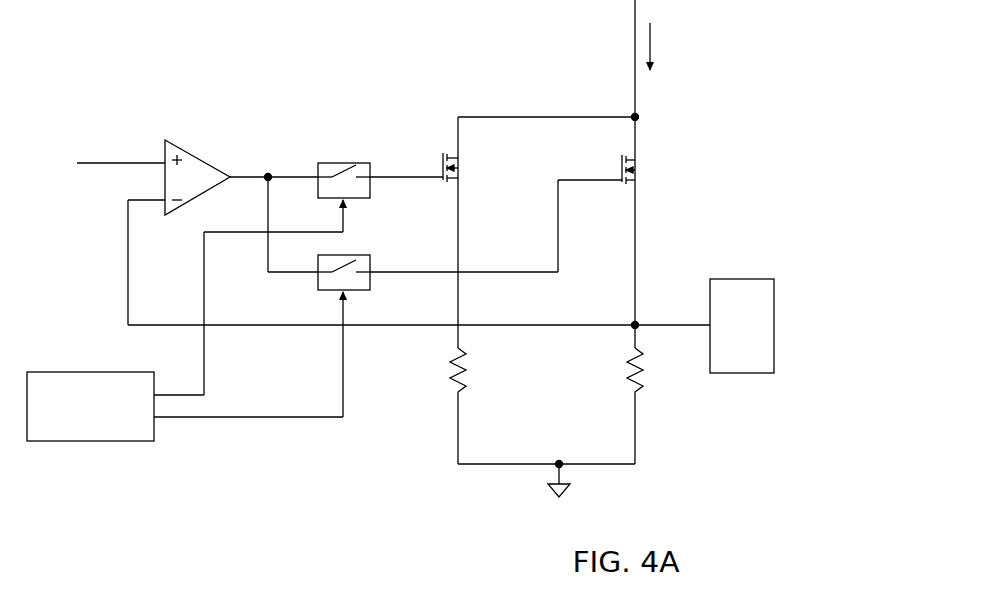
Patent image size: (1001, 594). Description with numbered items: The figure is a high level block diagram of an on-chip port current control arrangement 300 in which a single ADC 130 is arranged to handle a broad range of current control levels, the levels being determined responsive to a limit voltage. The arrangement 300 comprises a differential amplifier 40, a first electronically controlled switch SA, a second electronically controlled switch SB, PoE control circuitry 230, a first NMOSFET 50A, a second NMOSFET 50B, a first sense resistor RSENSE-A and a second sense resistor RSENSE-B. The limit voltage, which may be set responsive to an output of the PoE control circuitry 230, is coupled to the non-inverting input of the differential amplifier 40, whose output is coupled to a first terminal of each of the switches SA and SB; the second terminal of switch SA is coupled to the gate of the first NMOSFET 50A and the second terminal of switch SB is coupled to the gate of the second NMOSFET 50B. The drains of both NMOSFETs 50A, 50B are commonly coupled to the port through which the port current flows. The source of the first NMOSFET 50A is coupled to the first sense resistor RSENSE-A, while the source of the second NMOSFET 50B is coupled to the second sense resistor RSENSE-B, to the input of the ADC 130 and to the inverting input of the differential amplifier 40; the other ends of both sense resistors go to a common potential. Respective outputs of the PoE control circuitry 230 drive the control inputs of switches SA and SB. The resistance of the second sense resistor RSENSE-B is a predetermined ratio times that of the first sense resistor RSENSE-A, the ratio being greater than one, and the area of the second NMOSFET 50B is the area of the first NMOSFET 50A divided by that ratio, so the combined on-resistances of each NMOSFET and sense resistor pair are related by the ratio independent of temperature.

The on-chip port current control arrangement 300 is at (128, 27).
The differential amplifier 40 is at (193, 153).
The first electronically controlled switch SA is at (332, 162).
The second electronically controlled switch SB is at (357, 254).
The first NMOSFET 50A is at (465, 162).
The second NMOSFET 50B is at (647, 163).
The first sense resistor RSENSE-A is at (478, 372).
The second sense resistor RSENSE-B is at (645, 368).
The ADC 130 is at (748, 279).
The PoE control circuitry 230 is at (90, 441).